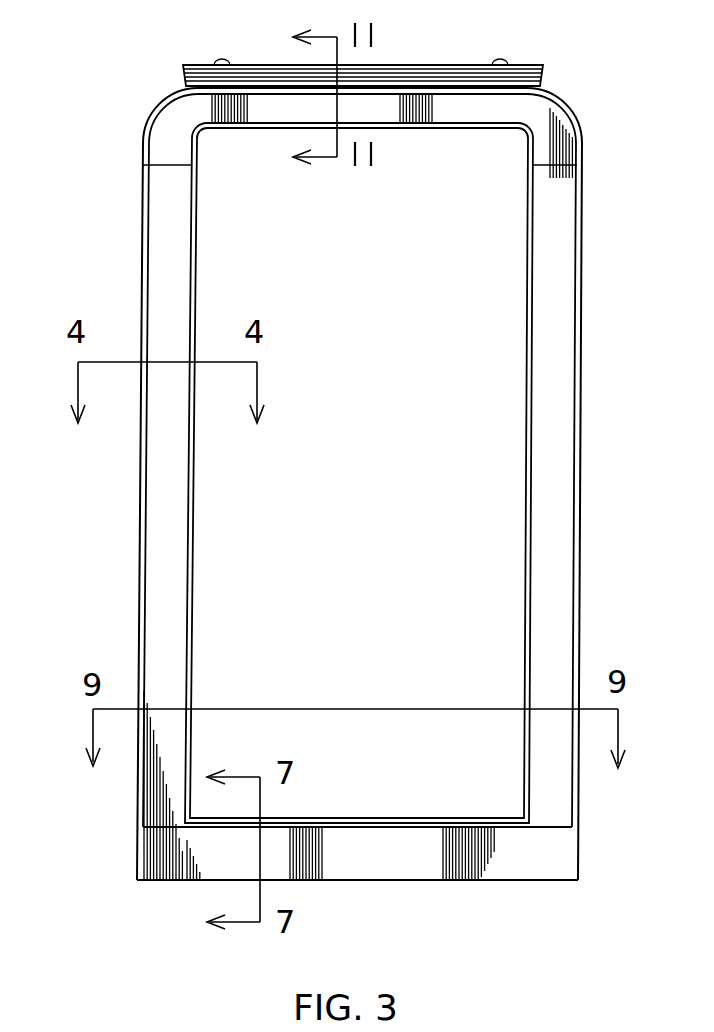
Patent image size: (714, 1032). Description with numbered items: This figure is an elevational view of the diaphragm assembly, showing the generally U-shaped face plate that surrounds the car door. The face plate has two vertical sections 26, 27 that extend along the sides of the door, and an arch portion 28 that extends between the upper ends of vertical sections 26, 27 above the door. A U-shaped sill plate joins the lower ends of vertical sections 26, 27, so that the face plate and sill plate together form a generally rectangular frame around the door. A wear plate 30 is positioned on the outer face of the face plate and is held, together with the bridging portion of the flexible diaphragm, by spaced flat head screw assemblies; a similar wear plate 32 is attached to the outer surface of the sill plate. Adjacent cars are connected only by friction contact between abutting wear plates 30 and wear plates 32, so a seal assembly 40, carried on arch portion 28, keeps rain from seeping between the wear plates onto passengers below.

The vertical section 26 is at (143, 232).
The vertical section 27 is at (576, 401).
The arch portion 28 is at (157, 110).
The wear plate 30 is at (552, 112).
The wear plate 32 is at (467, 862).
The seal assembly 40 is at (457, 40).